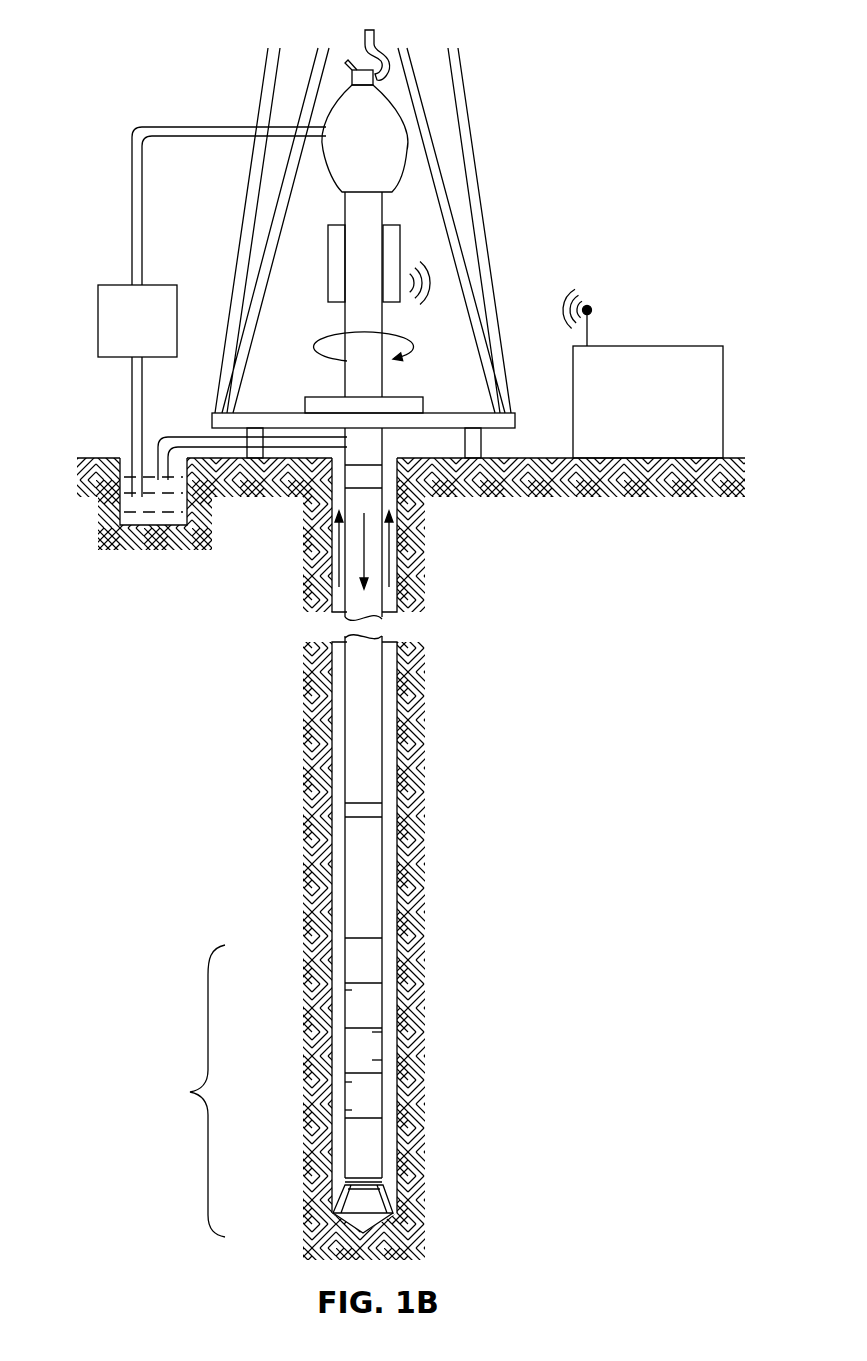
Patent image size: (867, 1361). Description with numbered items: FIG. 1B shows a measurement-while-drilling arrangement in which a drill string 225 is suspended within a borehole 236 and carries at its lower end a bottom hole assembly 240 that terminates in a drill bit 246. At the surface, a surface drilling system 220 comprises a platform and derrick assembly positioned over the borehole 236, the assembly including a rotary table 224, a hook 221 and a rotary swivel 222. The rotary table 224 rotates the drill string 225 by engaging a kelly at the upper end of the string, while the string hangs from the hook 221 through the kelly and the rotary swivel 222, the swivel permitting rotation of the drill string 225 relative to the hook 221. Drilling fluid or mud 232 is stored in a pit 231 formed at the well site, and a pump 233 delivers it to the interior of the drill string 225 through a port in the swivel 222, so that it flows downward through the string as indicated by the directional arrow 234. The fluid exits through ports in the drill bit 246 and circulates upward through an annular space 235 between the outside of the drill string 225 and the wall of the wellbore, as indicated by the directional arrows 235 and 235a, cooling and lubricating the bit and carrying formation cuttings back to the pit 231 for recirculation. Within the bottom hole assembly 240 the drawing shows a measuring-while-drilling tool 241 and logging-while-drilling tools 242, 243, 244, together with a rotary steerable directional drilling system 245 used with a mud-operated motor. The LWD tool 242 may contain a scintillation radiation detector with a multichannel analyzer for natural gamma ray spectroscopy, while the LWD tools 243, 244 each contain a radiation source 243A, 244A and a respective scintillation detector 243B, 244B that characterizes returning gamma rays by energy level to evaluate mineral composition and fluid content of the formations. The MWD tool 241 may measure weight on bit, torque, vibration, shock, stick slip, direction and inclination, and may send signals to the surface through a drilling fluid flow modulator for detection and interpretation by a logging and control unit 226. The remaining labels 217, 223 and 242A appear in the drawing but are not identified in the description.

The wellbore 217 is at (412, 728).
The surface drilling system 220 is at (489, 108).
The hook 221 is at (387, 50).
The rotary swivel 222 is at (333, 173).
The kelly 223 is at (355, 380).
The rotary table 224 is at (387, 403).
The drill string 225 is at (365, 447).
The logging and control unit 226 is at (683, 346).
The pit 231 is at (147, 518).
The drilling fluid or mud 232 is at (125, 450).
The pump 233 is at (122, 285).
The directional arrow 234 is at (362, 543).
The annular space 235 is at (338, 535).
The directional arrow 235a is at (390, 557).
The borehole 236 is at (390, 462).
The bottom hole assembly 240 is at (186, 1091).
The measuring-while-drilling tool 241 is at (372, 958).
The logging-while-drilling tool 242 is at (372, 1003).
The sensor 242A is at (353, 990).
The logging-while-drilling tool 243 is at (372, 1045).
The radiation source 243A is at (372, 1060).
The scintillation type radiation detector 243B is at (372, 1032).
The logging-while-drilling tool 244 is at (372, 1090).
The radiation source 244A is at (353, 1110).
The scintillation type radiation detector 244B is at (353, 1082).
The rotary steerable directional drilling system 245 is at (372, 1138).
The drill bit 246 is at (372, 1200).